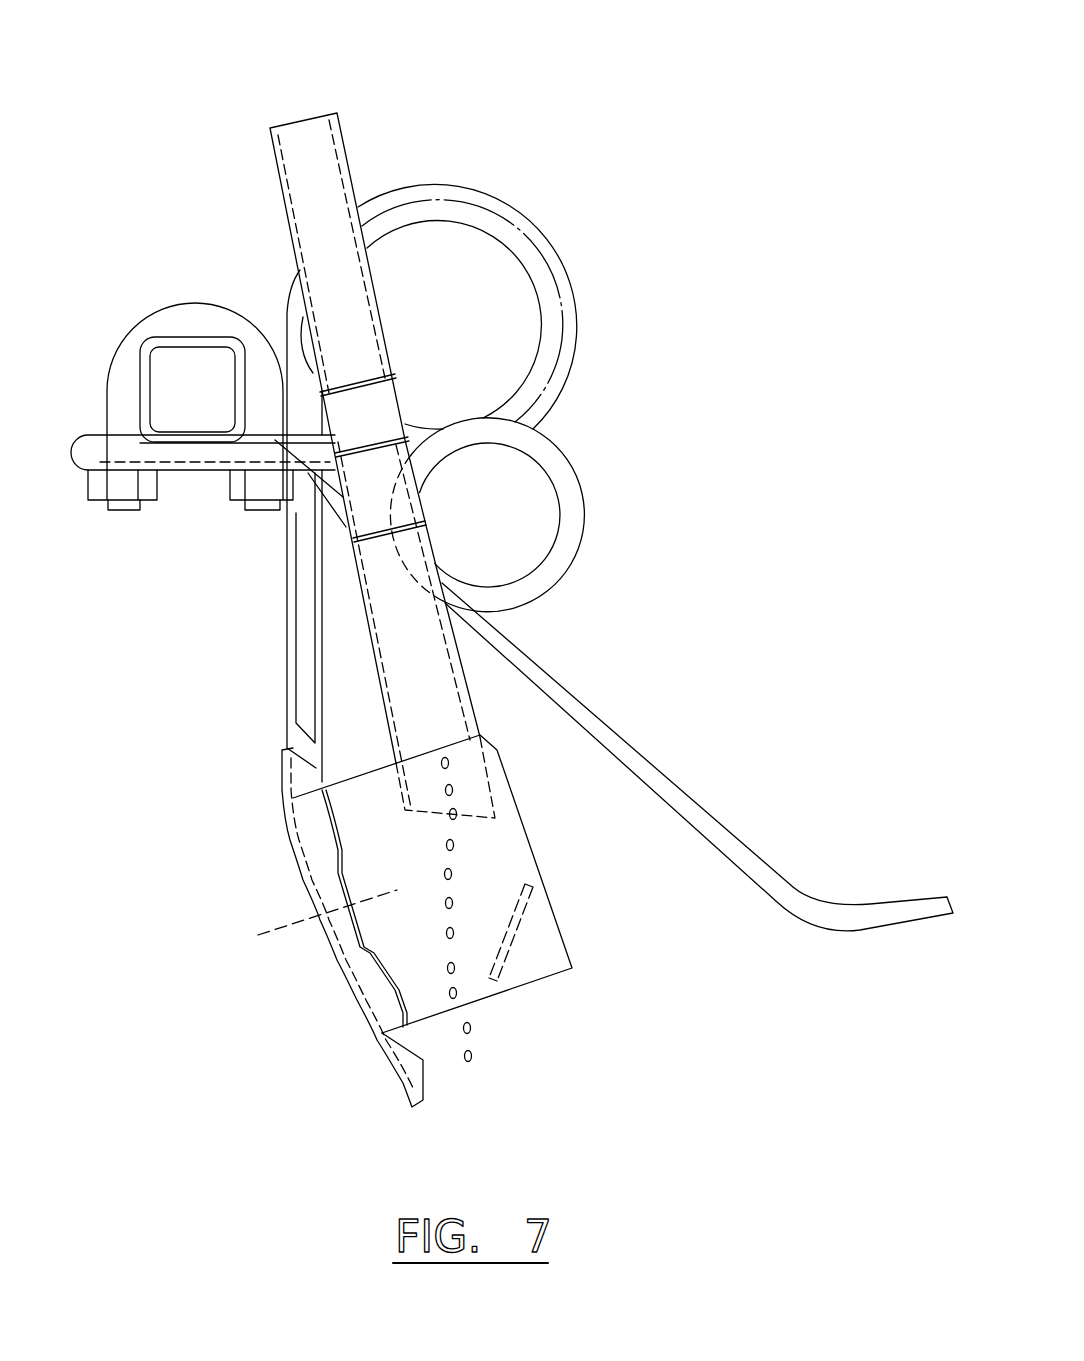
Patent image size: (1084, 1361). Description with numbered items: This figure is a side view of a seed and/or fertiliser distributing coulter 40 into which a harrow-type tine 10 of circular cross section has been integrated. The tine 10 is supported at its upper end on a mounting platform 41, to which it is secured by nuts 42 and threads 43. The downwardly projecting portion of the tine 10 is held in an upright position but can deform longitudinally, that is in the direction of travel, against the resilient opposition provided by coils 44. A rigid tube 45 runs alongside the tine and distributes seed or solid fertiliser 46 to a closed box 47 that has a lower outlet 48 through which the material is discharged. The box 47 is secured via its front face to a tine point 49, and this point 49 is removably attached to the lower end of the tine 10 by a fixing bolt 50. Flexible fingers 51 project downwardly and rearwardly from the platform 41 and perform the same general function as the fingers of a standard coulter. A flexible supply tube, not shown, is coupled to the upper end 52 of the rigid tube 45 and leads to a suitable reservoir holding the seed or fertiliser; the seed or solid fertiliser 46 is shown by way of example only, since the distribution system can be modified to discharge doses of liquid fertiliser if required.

The harrow-type tine 10 is at (288, 667).
The coulter 40 is at (583, 417).
The mounting platform 41 is at (197, 455).
The nuts 42 is at (93, 497).
The threads 43 is at (123, 510).
The coils 44 is at (575, 295).
The rigid tube 45 is at (355, 340).
The seed or solid fertiliser 46 is at (455, 846).
The closed box 47 is at (518, 836).
The lower outlet 48 is at (505, 1000).
The tine point 49 is at (387, 1068).
The fixing bolt 50 is at (300, 923).
The flexible fingers 51 is at (707, 820).
The upper end of rigid tube 52 is at (345, 128).